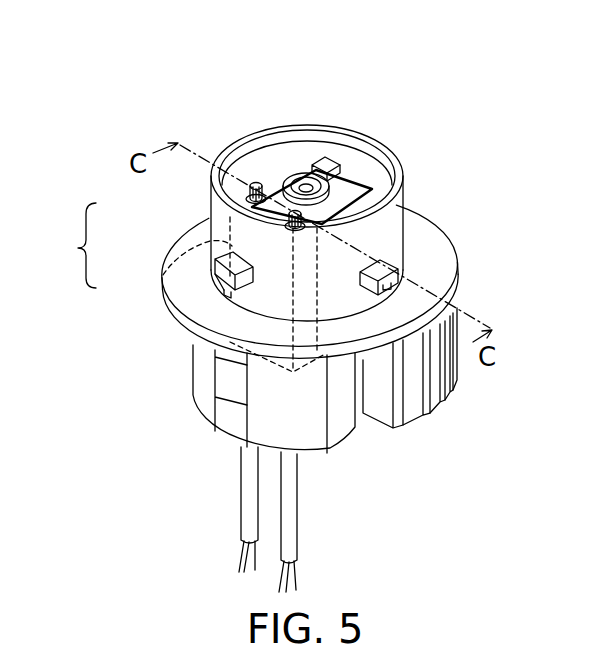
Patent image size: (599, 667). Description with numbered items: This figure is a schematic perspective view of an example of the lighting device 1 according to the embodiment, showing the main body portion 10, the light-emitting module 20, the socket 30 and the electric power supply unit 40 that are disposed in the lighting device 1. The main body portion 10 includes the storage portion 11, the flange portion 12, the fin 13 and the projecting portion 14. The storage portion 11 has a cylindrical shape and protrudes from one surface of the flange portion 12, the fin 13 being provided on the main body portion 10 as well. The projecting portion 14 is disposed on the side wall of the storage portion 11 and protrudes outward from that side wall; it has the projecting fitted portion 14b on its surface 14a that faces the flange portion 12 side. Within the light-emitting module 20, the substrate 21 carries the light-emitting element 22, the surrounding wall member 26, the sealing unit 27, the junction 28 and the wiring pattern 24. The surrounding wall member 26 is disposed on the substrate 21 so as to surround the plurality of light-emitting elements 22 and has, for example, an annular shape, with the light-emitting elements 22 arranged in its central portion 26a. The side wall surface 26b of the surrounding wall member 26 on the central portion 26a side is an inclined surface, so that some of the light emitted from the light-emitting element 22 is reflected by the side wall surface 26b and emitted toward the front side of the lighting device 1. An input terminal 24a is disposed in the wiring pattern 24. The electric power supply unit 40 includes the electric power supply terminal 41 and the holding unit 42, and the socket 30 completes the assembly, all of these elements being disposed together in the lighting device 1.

The lighting device 1 is at (533, 108).
The main body portion 10 is at (469, 217).
The storage portion 11 is at (350, 286).
The flange portion 12 is at (327, 357).
The fin 13 is at (437, 394).
The projecting portion 14 is at (195, 278).
The surface 14a is at (232, 293).
The projecting fitted portion 14b is at (223, 289).
The light-emitting module 20 is at (372, 170).
The substrate 21 is at (314, 165).
The light-emitting element 22 is at (308, 173).
The wiring pattern 24 is at (264, 178).
The input terminal 24a is at (292, 209).
The surrounding wall member 26 is at (324, 175).
The central portion 26a is at (272, 190).
The side wall surface 26b is at (368, 164).
The sealing unit 27 is at (311, 175).
The junction 28 is at (341, 186).
The socket 30 is at (220, 494).
The electric power supply unit 40 is at (78, 248).
The electric power supply terminal 41 is at (211, 197).
The holding unit 42 is at (163, 275).